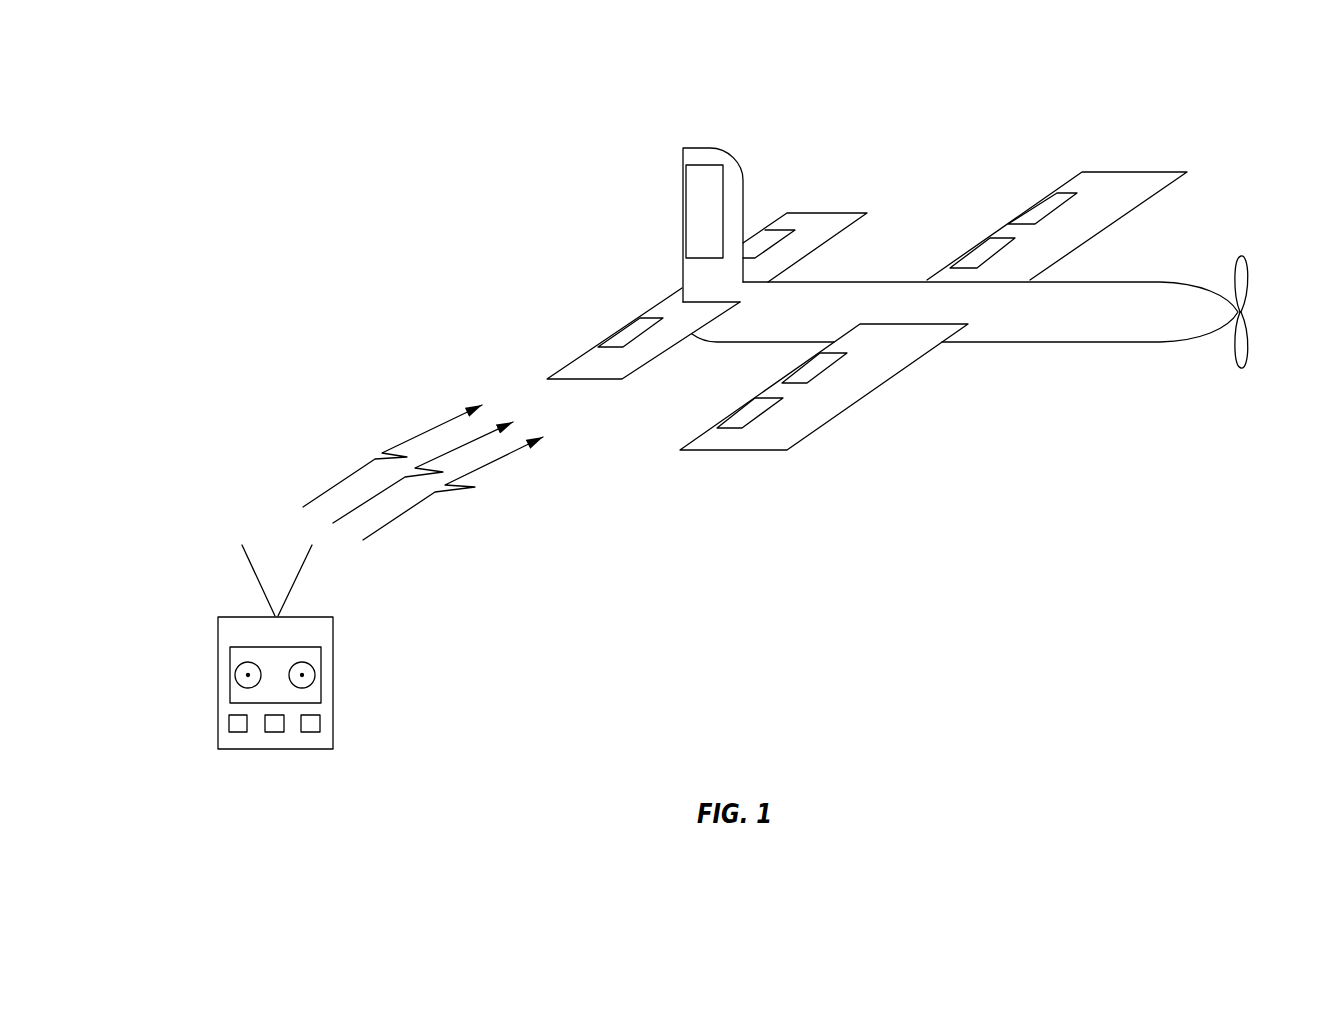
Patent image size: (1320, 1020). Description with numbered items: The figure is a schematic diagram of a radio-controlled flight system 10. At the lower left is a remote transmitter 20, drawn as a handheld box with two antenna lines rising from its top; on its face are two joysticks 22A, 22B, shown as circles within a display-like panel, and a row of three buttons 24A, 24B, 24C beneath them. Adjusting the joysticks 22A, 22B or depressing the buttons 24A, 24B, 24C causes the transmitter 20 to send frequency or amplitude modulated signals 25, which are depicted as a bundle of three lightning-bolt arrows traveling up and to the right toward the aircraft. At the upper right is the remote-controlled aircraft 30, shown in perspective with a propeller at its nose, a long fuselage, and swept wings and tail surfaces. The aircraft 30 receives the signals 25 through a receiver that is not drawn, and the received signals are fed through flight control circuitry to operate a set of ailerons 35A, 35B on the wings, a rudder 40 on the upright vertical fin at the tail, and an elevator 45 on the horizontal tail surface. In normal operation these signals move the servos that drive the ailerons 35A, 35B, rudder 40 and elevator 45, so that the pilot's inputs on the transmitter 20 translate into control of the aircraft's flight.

The radio-controlled flight system 10 is at (445, 150).
The remote transmitter 20 is at (368, 583).
The joystick 22A is at (248, 675).
The joystick 22B is at (302, 675).
The button 24A is at (238, 733).
The button 24B is at (272, 733).
The button 24C is at (325, 725).
The signals 25 is at (405, 443).
The remote-controlled aircraft 30 is at (1043, 137).
The aileron 35A is at (742, 415).
The aileron 35B is at (1036, 208).
The rudder 40 is at (695, 213).
The elevator 45 is at (773, 226).